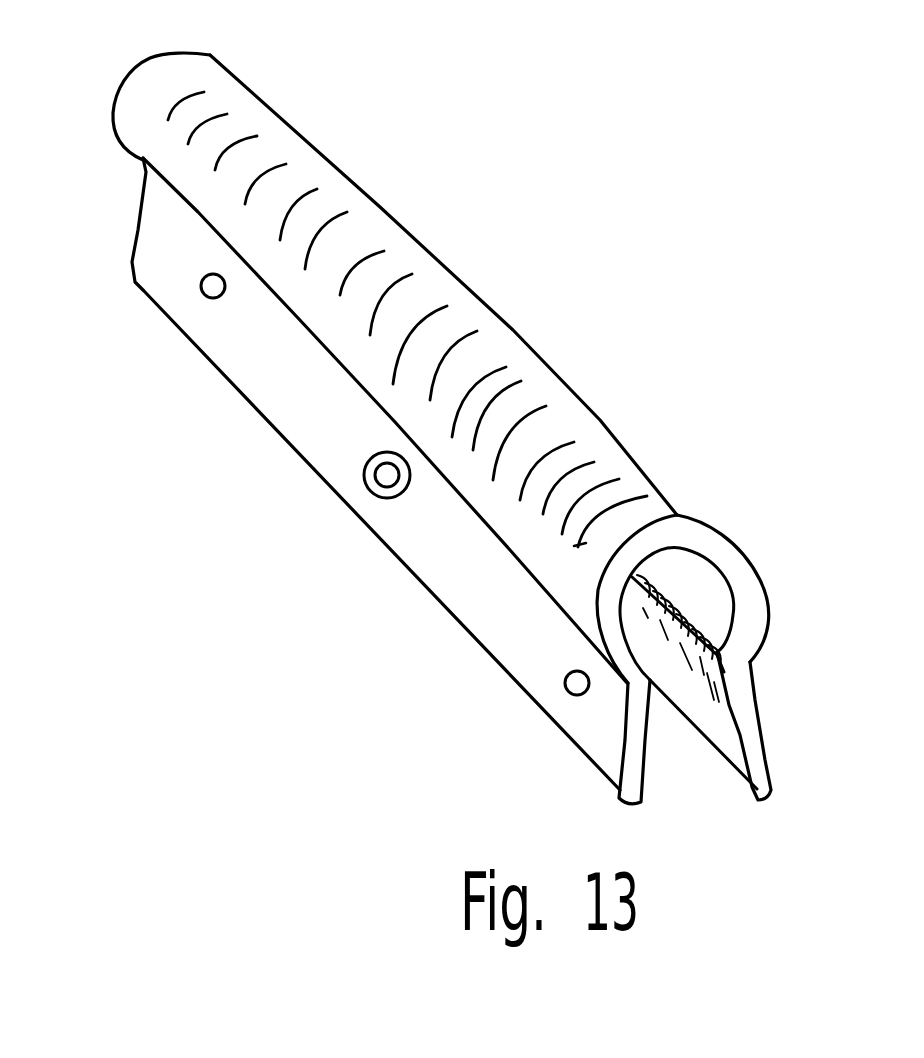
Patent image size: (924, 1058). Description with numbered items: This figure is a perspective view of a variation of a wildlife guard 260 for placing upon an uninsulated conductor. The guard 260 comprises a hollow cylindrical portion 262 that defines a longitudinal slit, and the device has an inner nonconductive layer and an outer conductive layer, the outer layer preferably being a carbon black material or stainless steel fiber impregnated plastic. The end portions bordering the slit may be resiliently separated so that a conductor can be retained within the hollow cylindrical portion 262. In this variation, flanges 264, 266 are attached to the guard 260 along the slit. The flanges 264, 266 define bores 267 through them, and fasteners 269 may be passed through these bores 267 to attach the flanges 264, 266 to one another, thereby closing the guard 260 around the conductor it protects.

The wildlife guard 260 is at (516, 280).
The hollow cylindrical portion 262 is at (723, 540).
The flange 264 is at (772, 727).
The flange 266 is at (620, 728).
The bore 267 is at (212, 299).
The fastener 269 is at (375, 498).